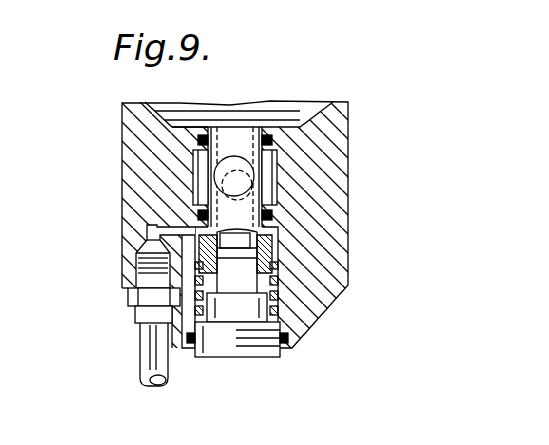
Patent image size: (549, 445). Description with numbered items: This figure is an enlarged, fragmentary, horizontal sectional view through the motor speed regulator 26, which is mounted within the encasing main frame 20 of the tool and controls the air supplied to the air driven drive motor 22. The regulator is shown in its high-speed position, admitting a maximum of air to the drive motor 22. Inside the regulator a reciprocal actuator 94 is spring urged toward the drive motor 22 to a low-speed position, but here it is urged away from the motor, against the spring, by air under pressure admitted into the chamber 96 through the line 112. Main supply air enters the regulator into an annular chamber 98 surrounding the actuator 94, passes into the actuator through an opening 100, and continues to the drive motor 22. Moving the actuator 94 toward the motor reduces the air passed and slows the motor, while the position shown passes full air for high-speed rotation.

The drive motor 22 is at (288, 108).
The main frame 20 is at (118, 231).
The line 112 is at (147, 353).
The annular chamber 98 is at (272, 177).
The opening 100 is at (215, 177).
The actuator 94 is at (250, 205).
The chamber 96 is at (264, 227).
The motor speed regulator 26 is at (290, 271).